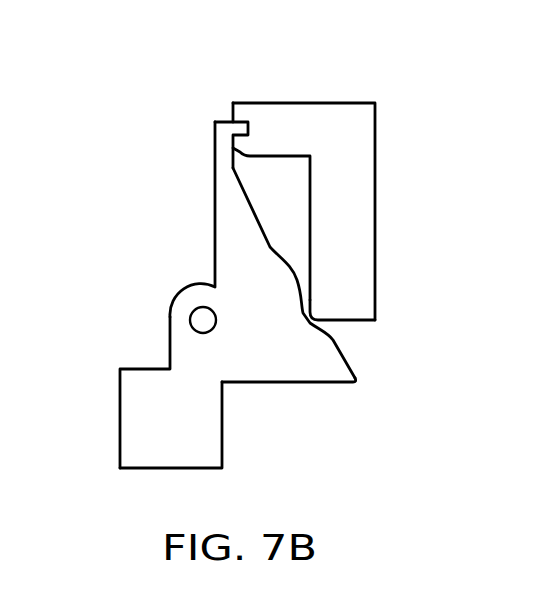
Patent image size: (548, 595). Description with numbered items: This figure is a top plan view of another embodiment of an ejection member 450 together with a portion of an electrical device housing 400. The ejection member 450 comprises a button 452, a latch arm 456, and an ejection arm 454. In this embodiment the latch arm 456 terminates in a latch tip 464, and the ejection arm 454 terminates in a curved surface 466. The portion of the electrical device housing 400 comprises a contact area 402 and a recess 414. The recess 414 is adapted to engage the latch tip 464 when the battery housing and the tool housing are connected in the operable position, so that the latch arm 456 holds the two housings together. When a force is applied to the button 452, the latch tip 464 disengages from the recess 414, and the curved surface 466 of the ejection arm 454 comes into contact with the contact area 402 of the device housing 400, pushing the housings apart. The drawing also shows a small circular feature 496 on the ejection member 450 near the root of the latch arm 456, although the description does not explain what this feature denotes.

The body member 400 is at (363, 238).
The bottom corner of body member 402 is at (348, 322).
The recess 414 is at (225, 117).
The hook projection 464 is at (223, 128).
The stem wall 456 is at (223, 180).
The inclined surface 466 is at (327, 353).
The shoulder 454 is at (330, 365).
The base member 450 is at (207, 435).
The base step 452 is at (130, 428).
The aperture 496 is at (195, 320).